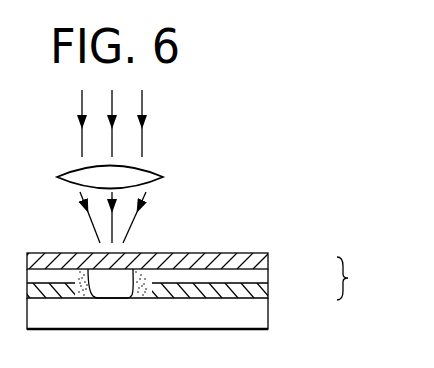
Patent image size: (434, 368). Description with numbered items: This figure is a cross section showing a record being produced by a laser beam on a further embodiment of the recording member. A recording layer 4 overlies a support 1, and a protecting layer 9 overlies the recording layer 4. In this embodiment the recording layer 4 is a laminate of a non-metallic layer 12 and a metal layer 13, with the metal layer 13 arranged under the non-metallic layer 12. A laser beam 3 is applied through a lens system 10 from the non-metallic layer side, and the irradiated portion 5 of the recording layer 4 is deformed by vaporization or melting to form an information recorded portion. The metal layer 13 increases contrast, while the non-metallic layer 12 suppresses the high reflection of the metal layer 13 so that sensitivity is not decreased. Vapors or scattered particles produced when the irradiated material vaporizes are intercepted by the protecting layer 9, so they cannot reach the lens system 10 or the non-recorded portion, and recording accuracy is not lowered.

The support 1 is at (255, 317).
The laser beam 3 is at (140, 208).
The recording layer 4 is at (370, 288).
The irradiated portion 5 is at (112, 290).
The protecting layer 9 is at (233, 260).
The lens system 10 is at (130, 123).
The non-metallic layer 12 is at (263, 276).
The metal layer 13 is at (258, 288).